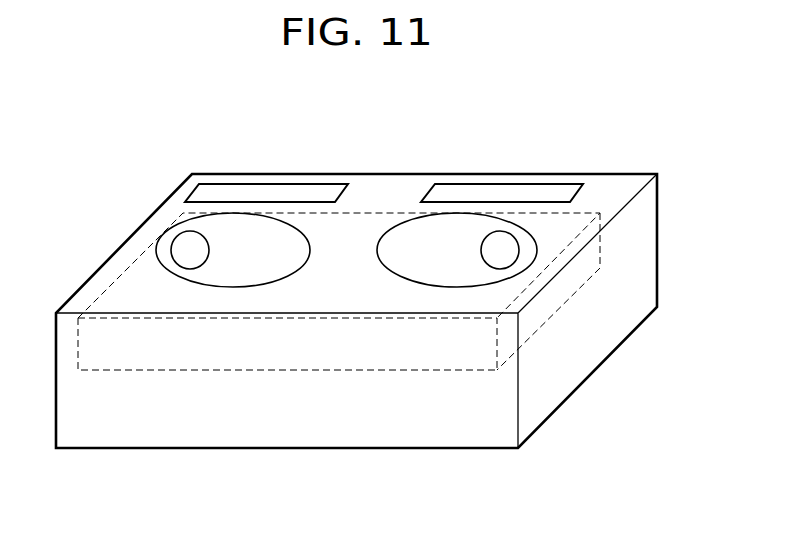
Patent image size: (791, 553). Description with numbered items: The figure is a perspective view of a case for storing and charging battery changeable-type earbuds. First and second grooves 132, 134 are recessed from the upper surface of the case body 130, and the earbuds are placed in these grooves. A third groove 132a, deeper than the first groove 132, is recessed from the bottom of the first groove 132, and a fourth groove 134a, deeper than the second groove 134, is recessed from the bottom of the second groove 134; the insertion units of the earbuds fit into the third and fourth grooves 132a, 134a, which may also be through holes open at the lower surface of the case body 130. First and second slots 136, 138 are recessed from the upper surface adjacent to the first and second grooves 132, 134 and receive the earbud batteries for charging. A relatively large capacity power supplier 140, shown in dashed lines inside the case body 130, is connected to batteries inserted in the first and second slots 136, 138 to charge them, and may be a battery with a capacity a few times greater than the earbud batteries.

The case body 130 is at (403, 415).
The first groove 132 is at (168, 268).
The third groove 132a is at (172, 247).
The second groove 134 is at (520, 276).
The fourth groove 134a is at (519, 250).
The first slot 136 is at (275, 188).
The second slot 138 is at (510, 188).
The large capacity power supplier 140 is at (288, 370).